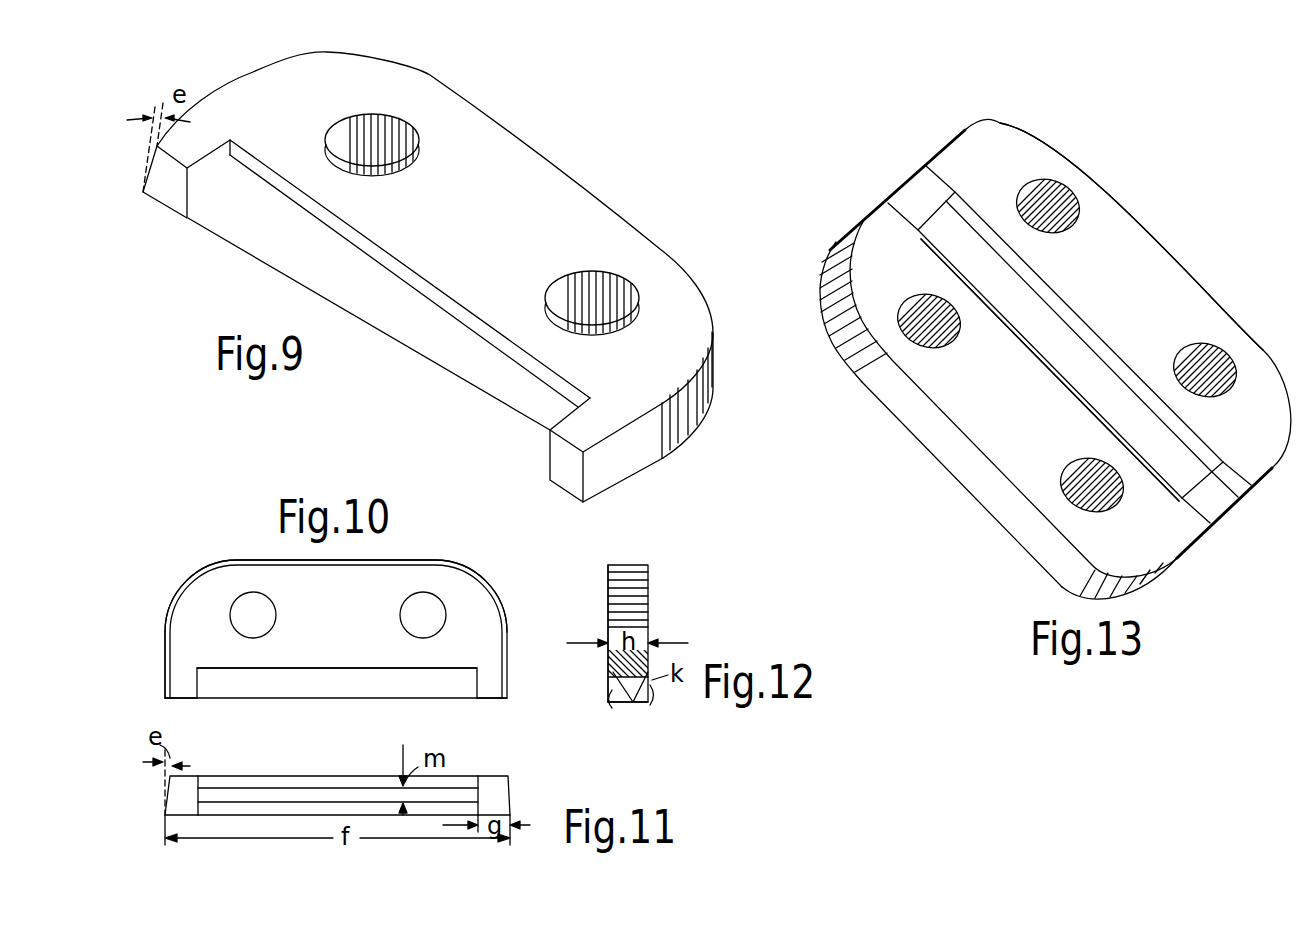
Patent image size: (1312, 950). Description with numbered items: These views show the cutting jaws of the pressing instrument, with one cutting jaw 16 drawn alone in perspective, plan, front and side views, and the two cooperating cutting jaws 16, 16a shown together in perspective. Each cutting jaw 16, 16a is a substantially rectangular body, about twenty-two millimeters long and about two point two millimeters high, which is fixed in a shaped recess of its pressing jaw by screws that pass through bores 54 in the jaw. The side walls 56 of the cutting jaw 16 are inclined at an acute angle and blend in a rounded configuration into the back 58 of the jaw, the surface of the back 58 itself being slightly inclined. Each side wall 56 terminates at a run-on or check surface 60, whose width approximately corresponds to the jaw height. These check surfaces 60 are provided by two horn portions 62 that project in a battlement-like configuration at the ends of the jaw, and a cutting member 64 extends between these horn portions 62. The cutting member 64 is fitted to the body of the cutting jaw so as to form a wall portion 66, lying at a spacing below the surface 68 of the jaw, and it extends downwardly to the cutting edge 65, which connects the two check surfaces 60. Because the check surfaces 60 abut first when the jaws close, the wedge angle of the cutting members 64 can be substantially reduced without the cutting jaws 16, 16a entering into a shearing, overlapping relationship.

In FIG. 9, the cutting jaw 16 is at (608, 185).
In FIG. 10, the cutting jaw 16 is at (431, 555).
In FIG. 11, the cutting jaw 16 is at (517, 795).
In FIG. 12, the cutting jaw 16 is at (654, 617).
In FIG. 13, the cutting jaw 16 is at (934, 438).
In FIG. 13, the cutting jaw 16a is at (1162, 236).
In FIG. 9, the bores 54 is at (482, 225).
In FIG. 10, the bores 54 is at (410, 625).
In FIG. 13, the bores 54 is at (1068, 200).
In FIG. 9, the side walls 56 is at (648, 462).
In FIG. 10, the side walls 56 is at (165, 645).
In FIG. 12, the side walls 56 is at (615, 628).
In FIG. 13, the side walls 56 is at (1183, 557).
In FIG. 10, the back 58 is at (255, 560).
In FIG. 12, the back 58 is at (623, 565).
In FIG. 13, the back 58 is at (991, 485).
In FIG. 9, the run-on or check surface 60 is at (163, 186).
In FIG. 11, the run-on or check surface 60 is at (185, 785).
In FIG. 12, the run-on or check surface 60 is at (632, 708).
In FIG. 9, the horn portions 62 is at (200, 175).
In FIG. 10, the horn portions 62 is at (185, 683).
In FIG. 12, the horn portions 62 is at (608, 683).
In FIG. 13, the horn portions 62 is at (905, 207).
In FIG. 9, the cutting member 64 is at (458, 365).
In FIG. 10, the cutting member 64 is at (355, 683).
In FIG. 13, the cutting member 64 is at (1068, 355).
In FIG. 10, the cutting edge 65 is at (295, 688).
In FIG. 11, the cutting edge 65 is at (325, 800).
In FIG. 13, the cutting edge 65 is at (924, 248).
In FIG. 9, the wall portion 66 is at (530, 362).
In FIG. 11, the wall portion 66 is at (280, 785).
In FIG. 13, the wall portion 66 is at (1105, 348).
In FIG. 10, the surface 68 is at (350, 602).
In FIG. 13, the surface 68 is at (1140, 298).